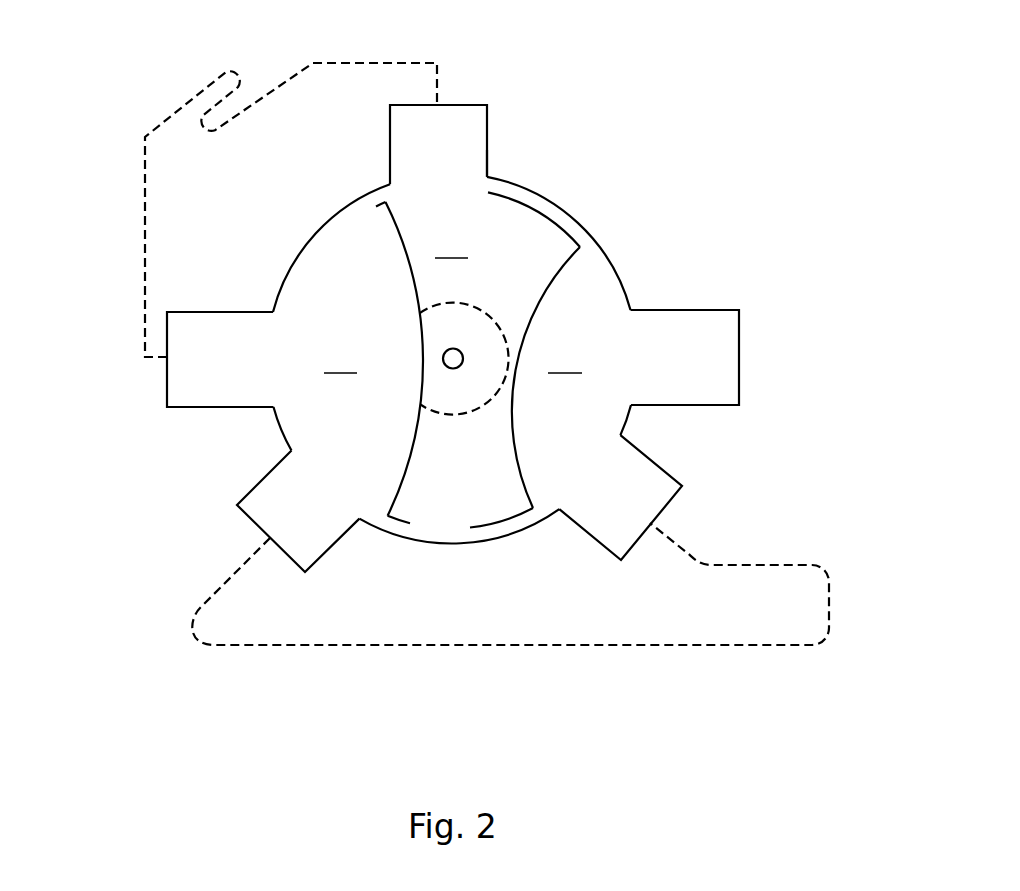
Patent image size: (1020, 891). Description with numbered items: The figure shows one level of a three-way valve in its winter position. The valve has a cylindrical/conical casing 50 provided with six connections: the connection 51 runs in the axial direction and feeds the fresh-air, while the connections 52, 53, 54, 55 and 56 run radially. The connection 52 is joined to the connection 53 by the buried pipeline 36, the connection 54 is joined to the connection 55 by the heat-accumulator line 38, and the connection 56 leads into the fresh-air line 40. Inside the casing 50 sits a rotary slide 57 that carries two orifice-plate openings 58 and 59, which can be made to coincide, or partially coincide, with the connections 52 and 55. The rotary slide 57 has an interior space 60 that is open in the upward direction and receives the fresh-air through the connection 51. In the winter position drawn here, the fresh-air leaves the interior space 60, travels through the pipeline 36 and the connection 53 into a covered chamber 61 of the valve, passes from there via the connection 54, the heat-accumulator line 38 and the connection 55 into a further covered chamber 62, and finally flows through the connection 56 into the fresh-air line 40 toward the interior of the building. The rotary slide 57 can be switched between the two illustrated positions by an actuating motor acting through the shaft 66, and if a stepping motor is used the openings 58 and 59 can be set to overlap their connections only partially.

The pipeline 36 is at (188, 103).
The heat-accumulator line 38 is at (413, 645).
The fresh-air line 40 is at (739, 355).
The casing 50 is at (552, 287).
The connection 51 is at (482, 309).
The connection 52 is at (487, 137).
The connection 53 is at (190, 312).
The connection 54 is at (253, 489).
The connection 55 is at (637, 533).
The connection 56 is at (715, 405).
The rotary slide 57 is at (565, 212).
The orifice-plate opening 58 is at (465, 190).
The orifice-plate opening 59 is at (447, 526).
The interior space 60 is at (427, 359).
The covered chamber 61 is at (355, 287).
The covered chamber 62 is at (526, 435).
The shaft 66 is at (453, 358).